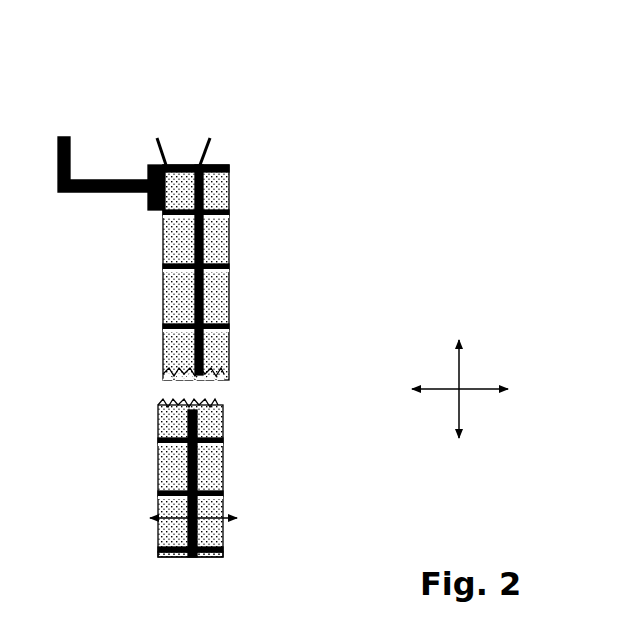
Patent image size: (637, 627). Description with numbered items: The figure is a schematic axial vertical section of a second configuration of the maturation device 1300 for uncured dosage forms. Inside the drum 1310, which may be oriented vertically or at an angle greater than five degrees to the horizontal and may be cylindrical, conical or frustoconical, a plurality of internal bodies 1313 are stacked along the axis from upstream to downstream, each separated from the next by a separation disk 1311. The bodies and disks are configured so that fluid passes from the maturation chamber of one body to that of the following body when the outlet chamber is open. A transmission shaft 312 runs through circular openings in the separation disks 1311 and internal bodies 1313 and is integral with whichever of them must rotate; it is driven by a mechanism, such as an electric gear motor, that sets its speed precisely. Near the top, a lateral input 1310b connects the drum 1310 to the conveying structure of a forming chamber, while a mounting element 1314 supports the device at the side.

The maturation device 1300 is at (292, 262).
The drum 1310 is at (247, 163).
The lateral input 1310b is at (190, 133).
The separation disk 1311 is at (213, 324).
The internal body 1313 is at (222, 183).
The mounting bracket 1314 is at (139, 215).
The transmission shaft 312 is at (203, 462).